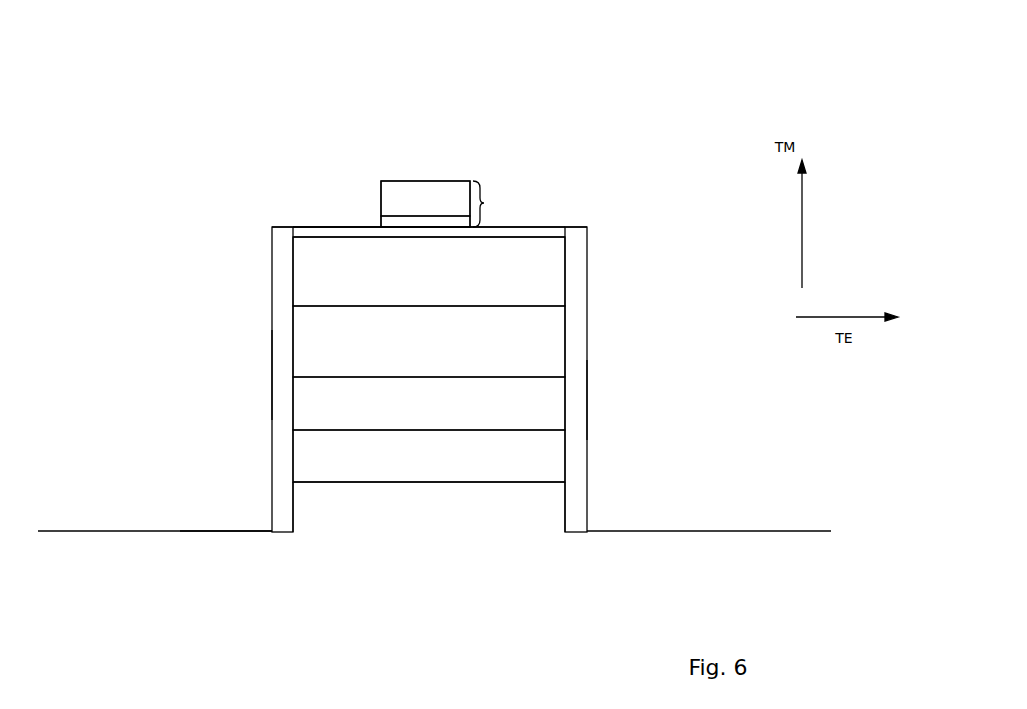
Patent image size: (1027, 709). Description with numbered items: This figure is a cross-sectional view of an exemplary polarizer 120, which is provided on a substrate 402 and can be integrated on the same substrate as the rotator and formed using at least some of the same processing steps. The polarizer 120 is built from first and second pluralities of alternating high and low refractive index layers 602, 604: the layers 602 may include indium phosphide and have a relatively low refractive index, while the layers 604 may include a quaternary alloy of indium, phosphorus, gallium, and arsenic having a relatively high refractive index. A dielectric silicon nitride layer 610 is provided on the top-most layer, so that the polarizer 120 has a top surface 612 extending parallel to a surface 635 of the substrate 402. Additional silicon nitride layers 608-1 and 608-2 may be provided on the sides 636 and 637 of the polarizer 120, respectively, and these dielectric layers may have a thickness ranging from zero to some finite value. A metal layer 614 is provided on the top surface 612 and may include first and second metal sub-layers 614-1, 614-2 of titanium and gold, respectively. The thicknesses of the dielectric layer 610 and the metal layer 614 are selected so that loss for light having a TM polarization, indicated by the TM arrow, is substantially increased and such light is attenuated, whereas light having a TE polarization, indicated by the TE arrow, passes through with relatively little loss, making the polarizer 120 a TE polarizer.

The polarizer 120 is at (97, 357).
The substrate 402 is at (673, 531).
The first plurality of layers 602 is at (486, 346).
The second plurality of layers 604 is at (486, 278).
The silicon nitride layer 608-1 is at (587, 284).
The silicon nitride layer 608-2 is at (272, 258).
The silicon nitride layer 610 is at (497, 228).
The top surface 612 is at (327, 225).
The metal layer 614 is at (484, 203).
The first metal sub-layer 614-1 is at (380, 217).
The second metal sub-layer 614-2 is at (458, 182).
The surface of substrate 635 is at (210, 531).
The side of polarizer 636 is at (606, 384).
The side of polarizer 637 is at (262, 373).